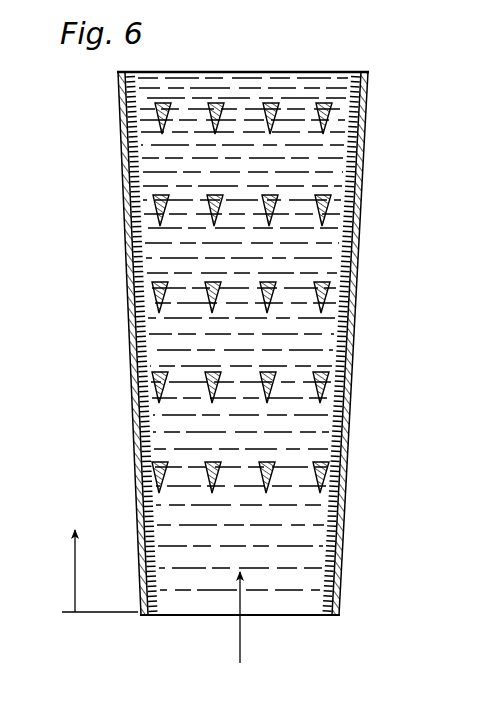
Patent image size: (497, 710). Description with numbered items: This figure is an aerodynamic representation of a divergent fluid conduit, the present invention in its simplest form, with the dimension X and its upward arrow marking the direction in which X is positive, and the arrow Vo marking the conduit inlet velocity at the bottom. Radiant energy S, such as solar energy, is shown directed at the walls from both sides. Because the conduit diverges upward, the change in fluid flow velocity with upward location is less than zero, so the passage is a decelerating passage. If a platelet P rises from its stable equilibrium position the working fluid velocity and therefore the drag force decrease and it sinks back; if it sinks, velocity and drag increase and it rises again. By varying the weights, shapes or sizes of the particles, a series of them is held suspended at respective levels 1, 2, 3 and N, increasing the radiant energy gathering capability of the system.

The radiant energy S is at (120, 193).
The N-th level N is at (275, 80).
The platelet P is at (221, 103).
The third level 3 is at (268, 298).
The second level 2 is at (268, 391).
The first level 1 is at (270, 482).
The dimension X is at (100, 557).
The conduit inlet velocity Vo is at (263, 619).